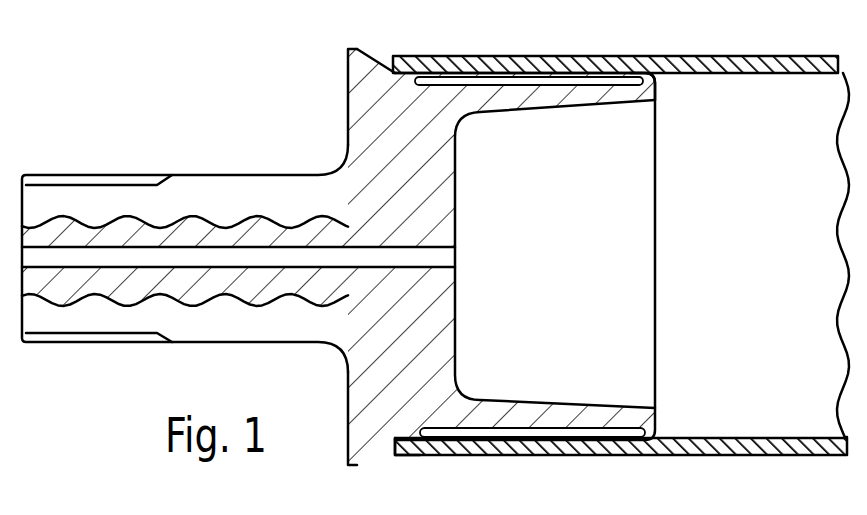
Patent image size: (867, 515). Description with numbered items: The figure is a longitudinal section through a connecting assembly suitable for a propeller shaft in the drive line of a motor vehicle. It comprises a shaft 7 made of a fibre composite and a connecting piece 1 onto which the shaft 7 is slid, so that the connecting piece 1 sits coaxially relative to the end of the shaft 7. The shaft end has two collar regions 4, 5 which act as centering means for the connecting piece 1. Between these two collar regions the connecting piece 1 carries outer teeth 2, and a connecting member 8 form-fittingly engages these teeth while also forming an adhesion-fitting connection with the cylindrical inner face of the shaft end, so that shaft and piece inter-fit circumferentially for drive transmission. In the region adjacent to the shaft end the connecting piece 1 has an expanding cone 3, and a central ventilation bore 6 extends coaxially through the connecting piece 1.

The connecting piece 1 is at (362, 120).
The outer teeth 2 is at (623, 80).
The expanding cone 3 is at (365, 55).
The collar region 4 is at (418, 458).
The collar region 5 is at (650, 440).
The central ventilation bore 6 is at (107, 255).
The shaft 7 is at (522, 60).
The connecting member 8 is at (562, 75).